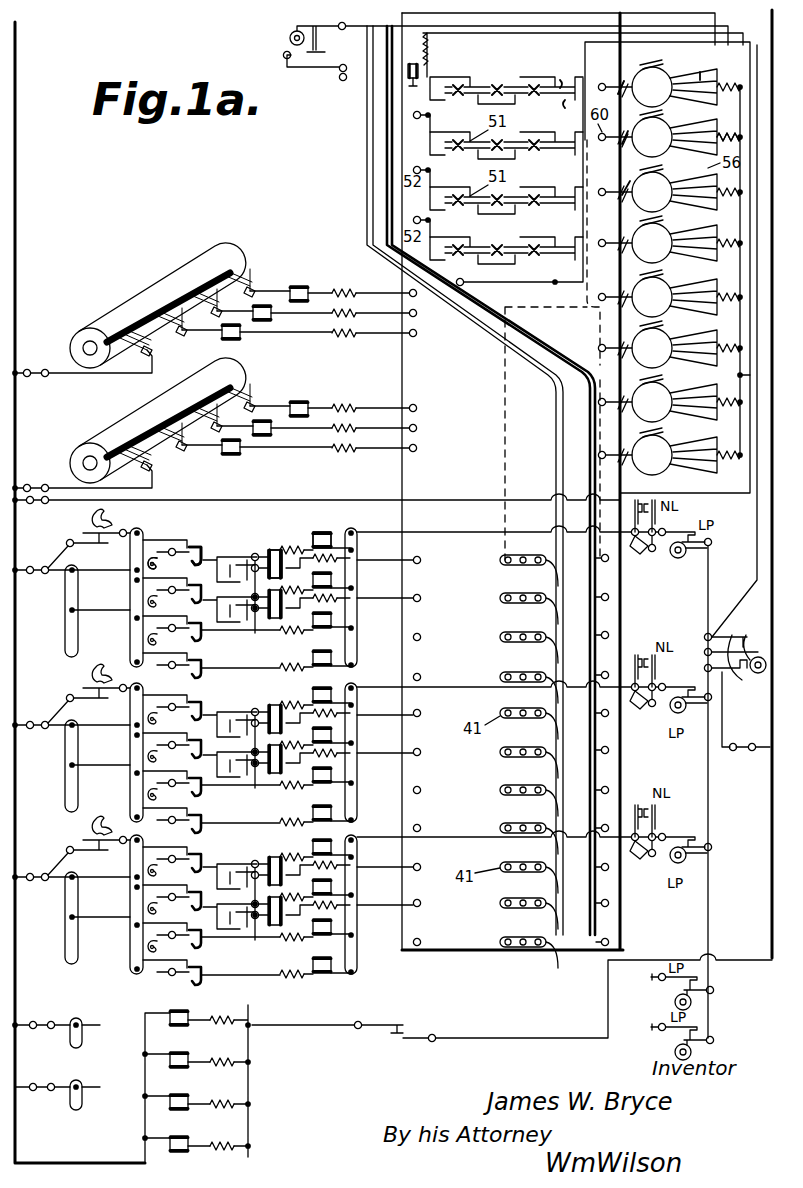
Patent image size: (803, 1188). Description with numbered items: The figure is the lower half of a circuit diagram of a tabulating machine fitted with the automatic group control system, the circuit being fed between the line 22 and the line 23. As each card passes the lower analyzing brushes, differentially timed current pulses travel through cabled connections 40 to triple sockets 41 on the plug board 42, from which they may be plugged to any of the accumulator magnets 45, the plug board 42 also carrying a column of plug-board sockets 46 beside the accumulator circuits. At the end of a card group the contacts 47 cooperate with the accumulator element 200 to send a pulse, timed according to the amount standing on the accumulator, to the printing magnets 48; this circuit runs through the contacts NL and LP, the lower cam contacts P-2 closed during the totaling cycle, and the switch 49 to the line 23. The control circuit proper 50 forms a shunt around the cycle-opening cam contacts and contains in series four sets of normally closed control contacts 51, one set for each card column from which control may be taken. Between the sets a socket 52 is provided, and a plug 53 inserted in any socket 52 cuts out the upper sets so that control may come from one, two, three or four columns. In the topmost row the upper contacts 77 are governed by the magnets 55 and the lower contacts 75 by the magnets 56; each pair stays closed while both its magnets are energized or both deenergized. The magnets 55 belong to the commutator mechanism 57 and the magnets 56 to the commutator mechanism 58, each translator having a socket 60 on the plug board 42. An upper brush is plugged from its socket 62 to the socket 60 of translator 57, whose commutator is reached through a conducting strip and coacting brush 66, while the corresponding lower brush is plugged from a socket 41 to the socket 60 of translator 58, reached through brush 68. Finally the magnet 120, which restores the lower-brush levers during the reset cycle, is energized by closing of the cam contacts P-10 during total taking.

The line 22 is at (17, 230).
The line 23 is at (772, 708).
The cabled connections 40 is at (552, 350).
The triple sockets 41 is at (503, 563).
The plug board 42 is at (402, 373).
The accumulator magnets 45 is at (273, 546).
The terminals 46 is at (421, 560).
The contacts 47 is at (204, 550).
The printing magnets 48 is at (330, 532).
The switch 49 is at (740, 752).
The control circuit 50 is at (724, 34).
The control contacts 51 is at (470, 86).
The socket 52 is at (416, 122).
The plug 53 is at (427, 74).
The magnets 55 is at (700, 72).
The magnets 56 is at (712, 118).
The commutator mechanism 57 is at (647, 72).
The commutator mechanism 58 is at (642, 127).
The socket 60 is at (602, 83).
The socket 62 is at (640, 592).
The brush 66 is at (628, 80).
The brush 68 is at (631, 173).
The lower contacts 75 is at (565, 104).
The upper contacts 77 is at (563, 79).
The magnet 120 is at (182, 1022).
The accumulator element 200 is at (154, 550).
The lower cam contacts P-2 is at (735, 647).
The cam contacts P-10 is at (347, 1025).